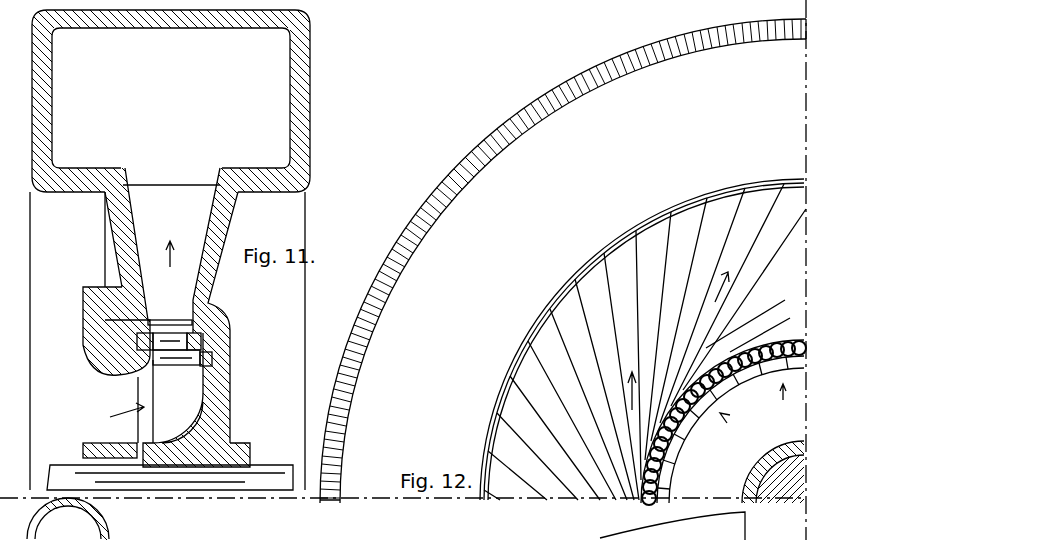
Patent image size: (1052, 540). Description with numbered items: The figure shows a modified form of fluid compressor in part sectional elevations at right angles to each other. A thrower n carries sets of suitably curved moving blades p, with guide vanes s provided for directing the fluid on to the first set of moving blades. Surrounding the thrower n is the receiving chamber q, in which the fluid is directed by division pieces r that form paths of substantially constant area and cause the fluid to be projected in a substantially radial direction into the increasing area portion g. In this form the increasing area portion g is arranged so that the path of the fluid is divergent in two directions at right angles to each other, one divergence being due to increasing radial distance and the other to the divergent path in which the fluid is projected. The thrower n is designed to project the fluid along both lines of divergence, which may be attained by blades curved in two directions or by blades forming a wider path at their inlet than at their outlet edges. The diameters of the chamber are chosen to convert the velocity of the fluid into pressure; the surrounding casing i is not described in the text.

In FIG. 11, the casing i is at (278, 124).
In FIG. 12, the casing i is at (563, 261).
In FIG. 11, the division pieces r is at (135, 205).
In FIG. 12, the division pieces r is at (510, 398).
In FIG. 11, the increasing area portion g is at (226, 212).
In FIG. 12, the increasing area portion g is at (590, 283).
In FIG. 11, the receiving chamber q is at (173, 327).
In FIG. 12, the receiving chamber q is at (793, 307).
In FIG. 11, the moving blades p is at (140, 362).
In FIG. 12, the moving blades p is at (763, 385).
In FIG. 11, the guide vanes s is at (175, 362).
In FIG. 12, the guide vanes s is at (692, 435).
In FIG. 11, the thrower n is at (202, 413).